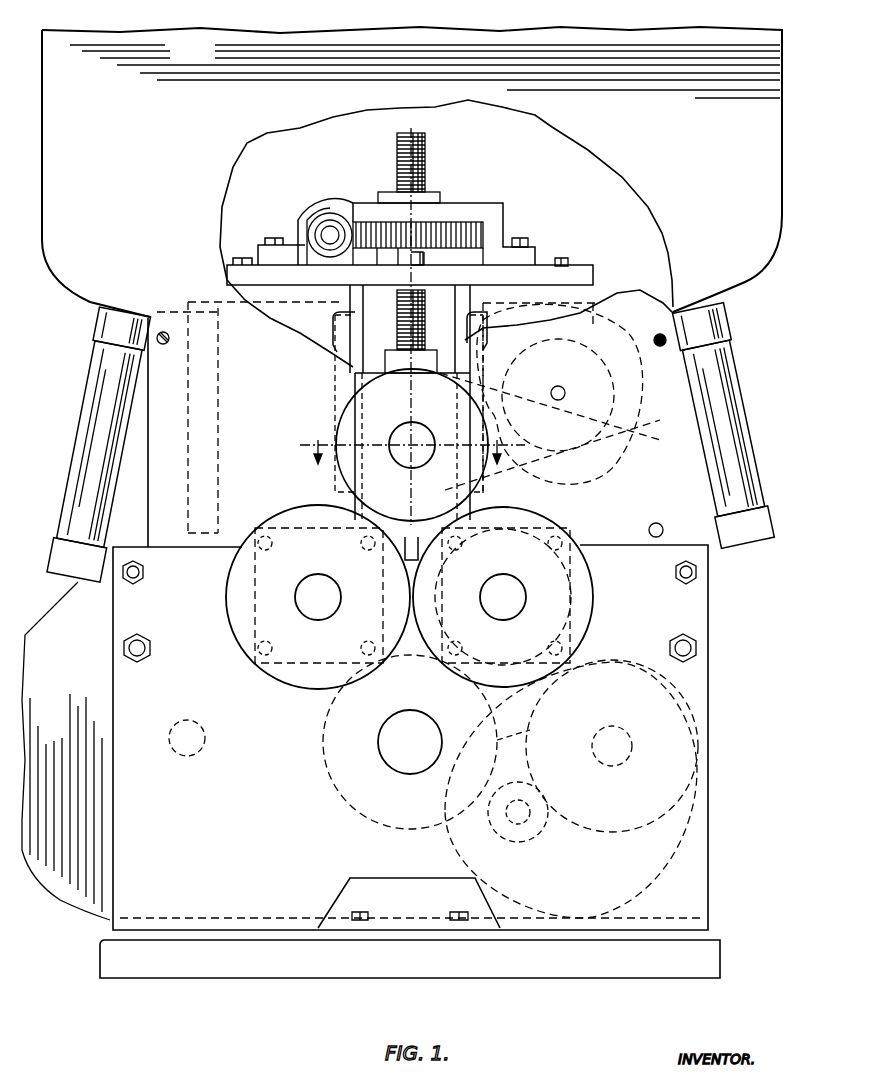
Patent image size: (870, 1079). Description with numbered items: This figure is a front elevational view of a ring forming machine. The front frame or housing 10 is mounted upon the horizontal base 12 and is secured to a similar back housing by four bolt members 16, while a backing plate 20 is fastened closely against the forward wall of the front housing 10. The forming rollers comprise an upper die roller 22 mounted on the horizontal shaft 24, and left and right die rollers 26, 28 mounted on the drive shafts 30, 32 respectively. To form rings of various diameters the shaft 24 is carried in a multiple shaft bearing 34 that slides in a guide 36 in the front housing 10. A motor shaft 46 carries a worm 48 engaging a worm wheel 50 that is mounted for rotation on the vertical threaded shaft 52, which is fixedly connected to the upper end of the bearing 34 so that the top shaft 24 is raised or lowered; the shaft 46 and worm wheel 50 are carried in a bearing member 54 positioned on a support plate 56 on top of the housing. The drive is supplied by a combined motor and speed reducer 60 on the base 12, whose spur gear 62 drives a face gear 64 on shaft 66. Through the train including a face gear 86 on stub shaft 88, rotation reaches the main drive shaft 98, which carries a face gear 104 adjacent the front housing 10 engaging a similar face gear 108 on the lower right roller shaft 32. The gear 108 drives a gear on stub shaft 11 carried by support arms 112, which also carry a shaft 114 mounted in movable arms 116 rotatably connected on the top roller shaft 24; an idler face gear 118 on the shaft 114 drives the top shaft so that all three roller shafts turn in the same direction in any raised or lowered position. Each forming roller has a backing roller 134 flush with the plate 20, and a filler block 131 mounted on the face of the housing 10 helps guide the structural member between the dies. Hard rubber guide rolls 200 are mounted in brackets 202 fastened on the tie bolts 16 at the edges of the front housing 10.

The front frame or housing 10 is at (116, 862).
The stub shaft 11 is at (649, 528).
The horizontal base 12 is at (242, 975).
The bolt members 16 is at (163, 345).
The backing plate 20 is at (412, 197).
The upper die roller 22 is at (336, 433).
The horizontal shaft 24 is at (412, 428).
The left die roller 26 is at (293, 684).
The right die roller 28 is at (558, 674).
The drive shaft 30 is at (295, 597).
The drive shaft 32 is at (527, 597).
The multiple shaft bearing 34 is at (372, 372).
The guide 36 is at (468, 324).
The motor shaft 46 is at (331, 230).
The worm 48 is at (318, 232).
The worm wheel 50 is at (465, 222).
The vertical threaded shaft 52 is at (428, 157).
The bearing member 54 is at (508, 222).
The support plate 56 is at (598, 276).
The combined motor and speed reducer 60 is at (690, 870).
The spur gear 62 is at (530, 838).
The face gear 64 is at (700, 738).
The shaft 66 is at (610, 768).
The face gear 86 is at (52, 855).
The stub shaft 88 is at (176, 758).
The main drive shaft 98 is at (382, 750).
The face gear 104 is at (348, 806).
The face gear 108 is at (512, 688).
The support arms 112 is at (695, 420).
The shaft 114 is at (558, 386).
The movable arms 116 is at (540, 468).
The idler face gear 118 is at (705, 378).
The filler block 131 is at (408, 550).
The backing roller 134 is at (590, 642).
The guide rolls 200 is at (70, 462).
The bracket 202 is at (108, 328).